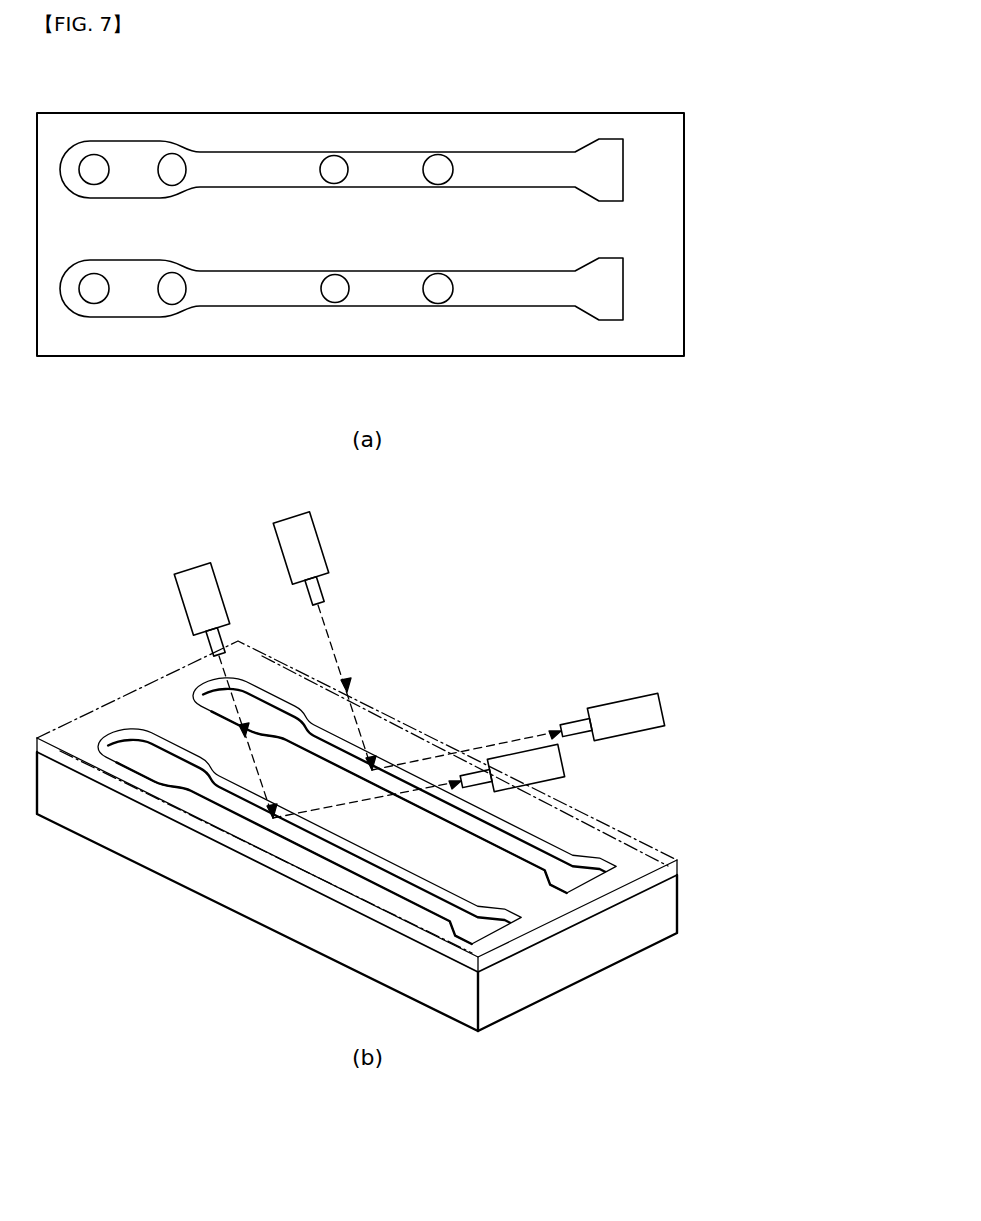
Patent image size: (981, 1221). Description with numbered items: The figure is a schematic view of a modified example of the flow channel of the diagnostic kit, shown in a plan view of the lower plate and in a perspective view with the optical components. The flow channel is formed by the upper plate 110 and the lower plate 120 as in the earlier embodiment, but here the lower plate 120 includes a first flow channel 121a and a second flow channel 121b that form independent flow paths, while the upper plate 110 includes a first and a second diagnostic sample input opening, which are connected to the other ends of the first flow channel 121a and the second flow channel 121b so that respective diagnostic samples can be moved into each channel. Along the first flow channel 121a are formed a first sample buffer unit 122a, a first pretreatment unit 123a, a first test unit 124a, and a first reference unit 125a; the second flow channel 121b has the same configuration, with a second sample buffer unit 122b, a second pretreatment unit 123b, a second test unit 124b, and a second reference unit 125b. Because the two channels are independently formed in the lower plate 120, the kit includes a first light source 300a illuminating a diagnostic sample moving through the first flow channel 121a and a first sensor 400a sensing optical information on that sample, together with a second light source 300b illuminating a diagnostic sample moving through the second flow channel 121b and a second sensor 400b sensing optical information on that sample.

The upper plate 110 is at (88, 713).
The lower plate 120 is at (646, 123).
The first flow channel 121a is at (518, 168).
The second flow channel 121b is at (518, 292).
The first sample buffer unit 122a is at (94, 168).
The second sample buffer unit 122b is at (94, 290).
The first pretreatment unit 123a is at (172, 168).
The second pretreatment unit 123b is at (172, 290).
The first test unit 124a is at (334, 168).
The second test unit 124b is at (335, 290).
The first reference unit 125a is at (438, 168).
The second reference unit 125b is at (438, 290).
The first light source 300a is at (312, 544).
The second light source 300b is at (193, 600).
The first sensor 400a is at (622, 708).
The second sensor 400b is at (527, 763).